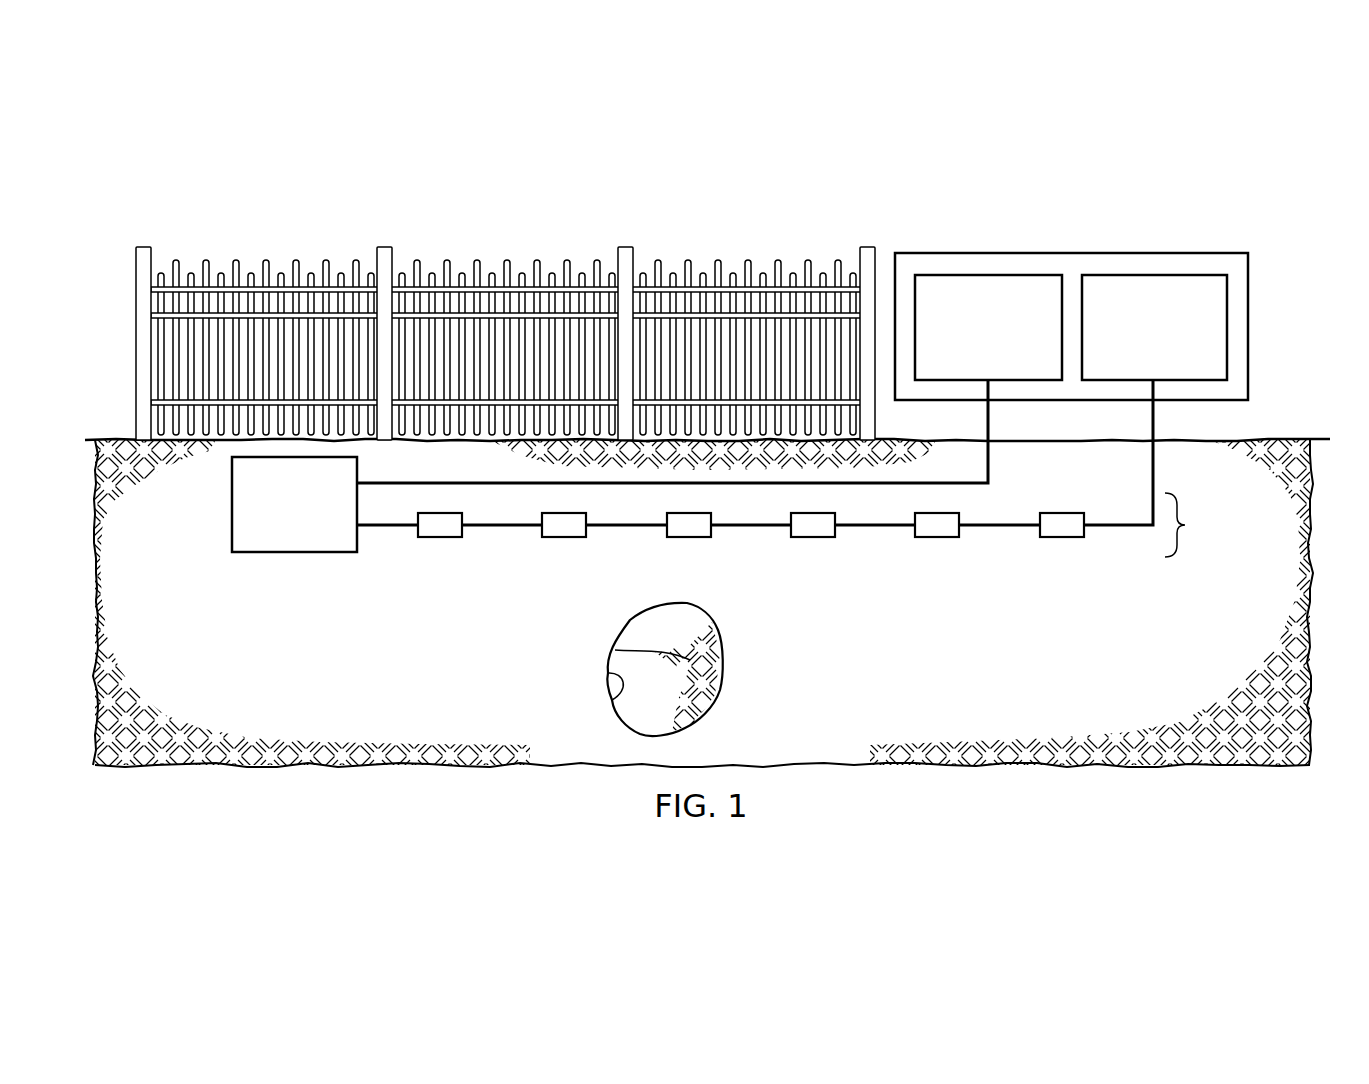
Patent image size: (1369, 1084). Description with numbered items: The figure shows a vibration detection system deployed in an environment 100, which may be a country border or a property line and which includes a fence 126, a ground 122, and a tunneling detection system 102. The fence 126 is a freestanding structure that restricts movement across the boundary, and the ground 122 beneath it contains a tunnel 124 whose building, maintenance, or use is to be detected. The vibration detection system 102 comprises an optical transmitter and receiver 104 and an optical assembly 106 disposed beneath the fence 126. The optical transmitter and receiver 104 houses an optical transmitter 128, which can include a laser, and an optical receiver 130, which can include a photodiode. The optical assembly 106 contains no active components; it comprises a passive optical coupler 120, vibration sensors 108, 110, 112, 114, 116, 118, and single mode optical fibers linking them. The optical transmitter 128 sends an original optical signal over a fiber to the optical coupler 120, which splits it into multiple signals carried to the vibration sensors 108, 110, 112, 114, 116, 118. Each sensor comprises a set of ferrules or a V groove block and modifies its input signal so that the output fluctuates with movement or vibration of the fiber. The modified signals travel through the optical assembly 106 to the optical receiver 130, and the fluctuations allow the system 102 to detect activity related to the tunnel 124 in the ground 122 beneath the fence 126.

The environment 100 is at (355, 170).
The vibration detection system 102 is at (1157, 186).
The optical transmitter and receiver 104 is at (1074, 248).
The optical assembly 106 is at (993, 462).
The vibration sensor 108 is at (1066, 537).
The vibration sensor 110 is at (941, 537).
The vibration sensor 112 is at (817, 537).
The vibration sensor 114 is at (693, 537).
The vibration sensor 116 is at (568, 537).
The vibration sensor 118 is at (444, 537).
The passive optical coupler 120 is at (230, 505).
The ground 122 is at (276, 655).
The tunnel 124 is at (607, 703).
The fence 126 is at (114, 315).
The optical transmitter 128 is at (968, 359).
The optical receiver 130 is at (1134, 359).